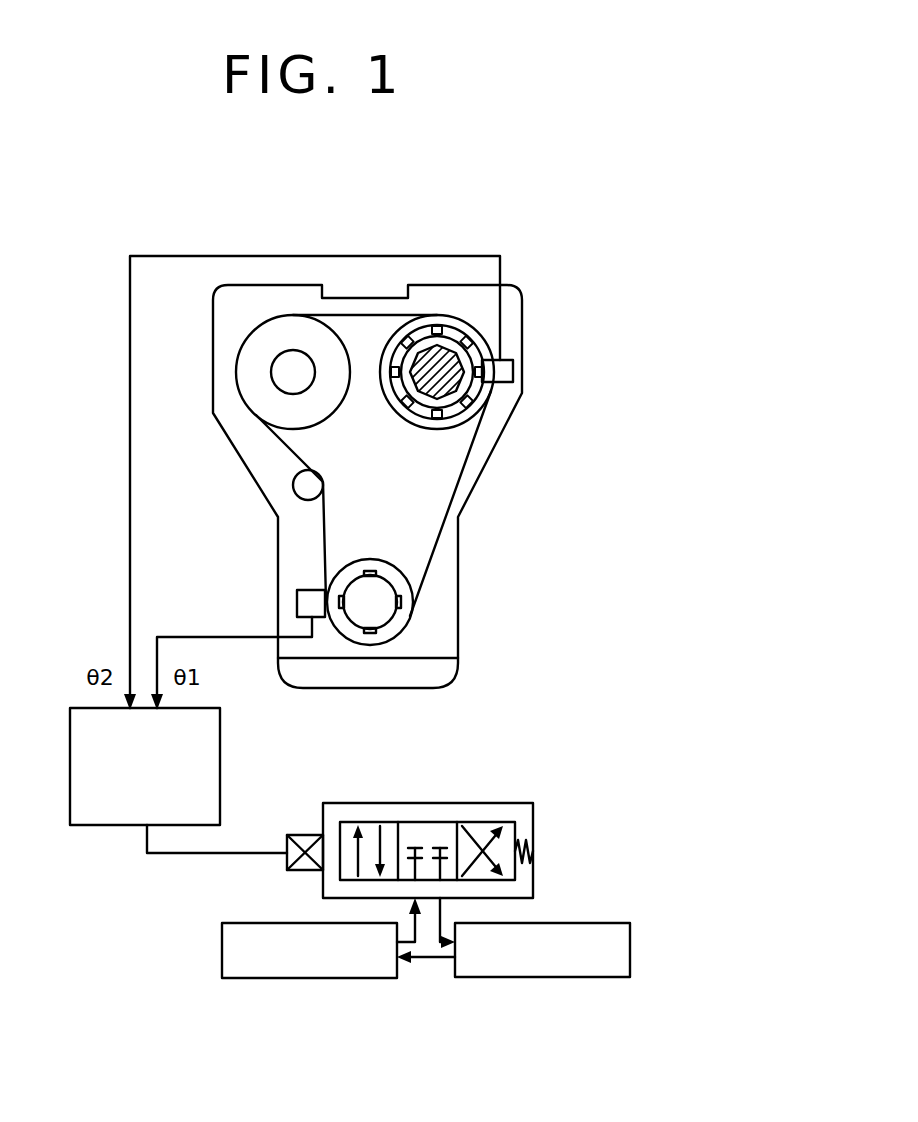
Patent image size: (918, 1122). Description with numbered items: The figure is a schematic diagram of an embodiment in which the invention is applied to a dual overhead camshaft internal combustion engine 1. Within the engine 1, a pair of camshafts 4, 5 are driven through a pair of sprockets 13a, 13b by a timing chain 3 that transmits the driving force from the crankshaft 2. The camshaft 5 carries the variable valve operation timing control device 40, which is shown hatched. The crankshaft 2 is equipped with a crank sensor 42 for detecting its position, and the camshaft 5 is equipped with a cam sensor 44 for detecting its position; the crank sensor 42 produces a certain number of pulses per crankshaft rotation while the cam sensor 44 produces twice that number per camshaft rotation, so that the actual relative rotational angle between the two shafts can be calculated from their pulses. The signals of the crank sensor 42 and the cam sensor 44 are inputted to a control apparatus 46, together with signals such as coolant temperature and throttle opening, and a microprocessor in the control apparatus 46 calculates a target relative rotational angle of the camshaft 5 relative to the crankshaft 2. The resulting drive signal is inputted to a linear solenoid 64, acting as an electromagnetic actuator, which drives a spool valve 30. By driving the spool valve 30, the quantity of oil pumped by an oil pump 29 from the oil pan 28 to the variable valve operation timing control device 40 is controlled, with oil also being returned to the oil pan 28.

The internal combustion engine 1 is at (540, 300).
The crankshaft 2 is at (382, 610).
The timing chain 3 is at (443, 530).
The camshaft 4 is at (278, 370).
The camshaft 5 is at (428, 363).
The sprocket 13a is at (450, 320).
The sprocket 13b is at (268, 338).
The oil pan 28 is at (620, 923).
The oil pump 29 is at (222, 953).
The spool valve 30 is at (443, 803).
The variable valve operation timing control device 40 is at (488, 403).
The crank sensor 42 is at (307, 600).
The cam sensor 44 is at (498, 373).
The control apparatus 46 is at (112, 815).
The linear solenoid 64 is at (307, 835).